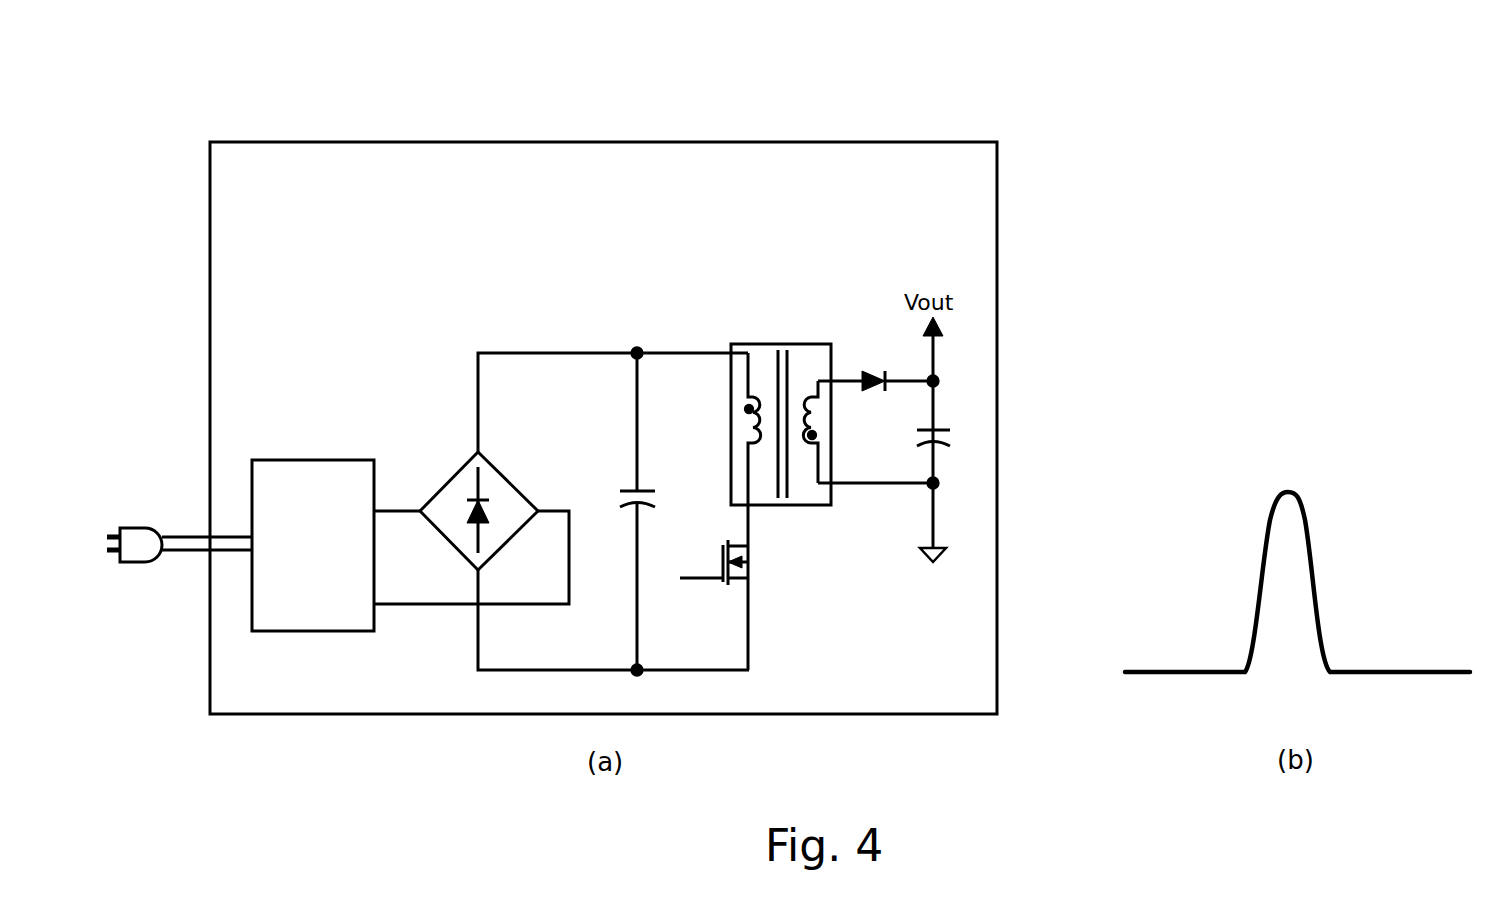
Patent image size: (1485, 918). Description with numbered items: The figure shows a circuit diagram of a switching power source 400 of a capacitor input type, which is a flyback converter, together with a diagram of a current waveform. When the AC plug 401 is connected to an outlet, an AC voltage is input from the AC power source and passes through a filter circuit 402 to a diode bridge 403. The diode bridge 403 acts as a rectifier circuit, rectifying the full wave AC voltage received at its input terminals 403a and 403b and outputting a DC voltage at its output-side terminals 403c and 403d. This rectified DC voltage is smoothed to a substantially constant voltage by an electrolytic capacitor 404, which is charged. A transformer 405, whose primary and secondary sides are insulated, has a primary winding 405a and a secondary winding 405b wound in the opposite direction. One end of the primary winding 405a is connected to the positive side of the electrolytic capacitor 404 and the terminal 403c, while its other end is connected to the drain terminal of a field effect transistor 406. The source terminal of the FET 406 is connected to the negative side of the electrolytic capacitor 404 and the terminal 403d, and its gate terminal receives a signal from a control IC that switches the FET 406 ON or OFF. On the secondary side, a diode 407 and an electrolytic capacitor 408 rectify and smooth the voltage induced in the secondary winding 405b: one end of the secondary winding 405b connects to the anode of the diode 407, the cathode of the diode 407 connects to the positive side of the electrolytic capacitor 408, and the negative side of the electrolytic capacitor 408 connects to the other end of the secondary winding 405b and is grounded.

The switching power source 400 is at (610, 141).
The AC plug 401 is at (152, 572).
The filter circuit 402 is at (278, 459).
The diode bridge 403 is at (491, 506).
The input terminal 403a is at (417, 503).
The input terminal 403b is at (540, 505).
The terminal 403c is at (485, 448).
The terminal 403d is at (472, 577).
The electrolytic capacitor 404 is at (628, 515).
The transformer 405 is at (746, 450).
The primary winding 405a is at (742, 393).
The secondary winding 405b is at (805, 453).
The field effect transistor 406 is at (757, 565).
The diode 407 is at (870, 357).
The electrolytic capacitor 408 is at (917, 450).